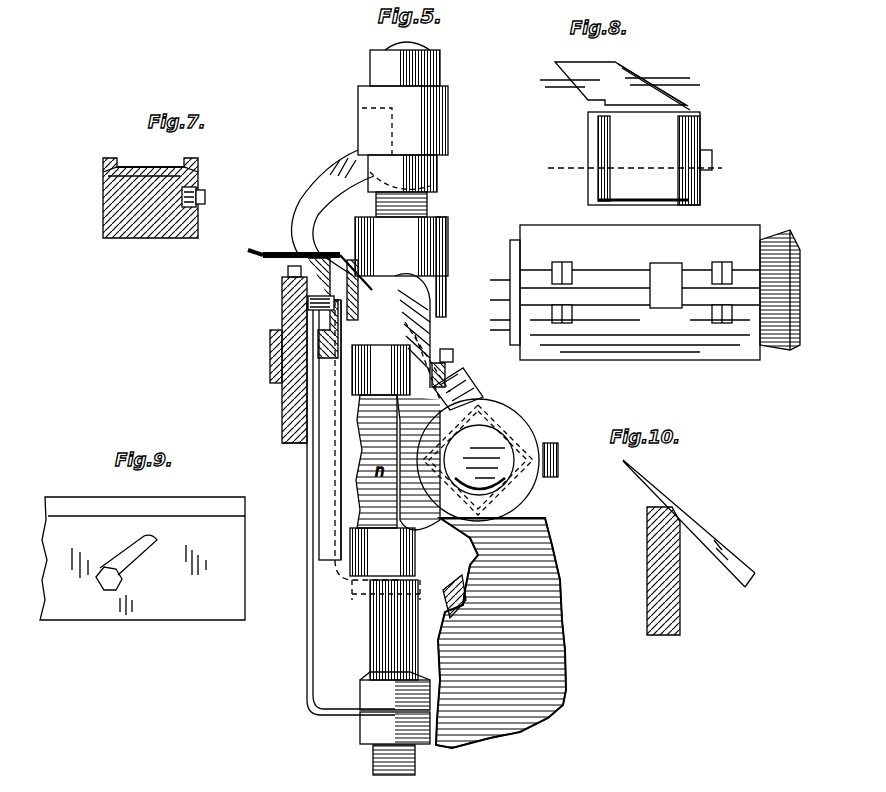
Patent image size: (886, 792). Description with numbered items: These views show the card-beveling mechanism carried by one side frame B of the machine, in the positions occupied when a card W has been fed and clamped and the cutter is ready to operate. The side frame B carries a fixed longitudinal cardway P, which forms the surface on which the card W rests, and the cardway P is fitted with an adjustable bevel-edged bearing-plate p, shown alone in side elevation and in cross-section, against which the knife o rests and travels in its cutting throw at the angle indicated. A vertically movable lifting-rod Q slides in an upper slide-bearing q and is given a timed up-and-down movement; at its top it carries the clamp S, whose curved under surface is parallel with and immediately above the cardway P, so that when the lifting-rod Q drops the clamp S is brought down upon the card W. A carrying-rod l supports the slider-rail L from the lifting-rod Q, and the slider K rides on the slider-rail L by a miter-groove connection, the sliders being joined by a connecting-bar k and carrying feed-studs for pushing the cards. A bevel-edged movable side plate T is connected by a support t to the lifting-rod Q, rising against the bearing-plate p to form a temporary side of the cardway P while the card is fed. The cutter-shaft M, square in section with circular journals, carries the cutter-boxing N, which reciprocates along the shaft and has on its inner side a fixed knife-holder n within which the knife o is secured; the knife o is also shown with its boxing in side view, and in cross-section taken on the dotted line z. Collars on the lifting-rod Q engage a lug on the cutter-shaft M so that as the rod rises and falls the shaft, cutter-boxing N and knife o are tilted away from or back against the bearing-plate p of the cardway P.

In FIG. 5, the clamp S is at (333, 212).
In FIG. 5, the cardway P is at (290, 250).
In FIG. 5, the card W is at (256, 253).
In FIG. 5, the slider K is at (281, 300).
In FIG. 5, the slider-rail L is at (269, 350).
In FIG. 5, the connecting-bar k is at (281, 378).
In FIG. 5, the cutter or knife o is at (352, 258).
In FIG. 7, the cutter or knife o is at (150, 168).
In FIG. 8, the cutter or knife o is at (654, 91).
In FIG. 10, the cutter or knife o is at (702, 528).
In FIG. 5, the upper slide-bearing q is at (401, 246).
In FIG. 5, the movable side plate T is at (393, 290).
In FIG. 5, the knife-holder n is at (448, 352).
In FIG. 7, the knife-holder n is at (103, 196).
In FIG. 8, the knife-holder n is at (596, 184).
In FIG. 5, the support t is at (331, 430).
In FIG. 5, the cutter-boxing N is at (530, 425).
In FIG. 8, the cutter-boxing N is at (640, 292).
In FIG. 5, the cutter-shaft M is at (479, 460).
In FIG. 8, the cutter-shaft M is at (510, 266).
In FIG. 5, the carrying-rod l is at (307, 630).
In FIG. 5, the lifting-rod Q is at (394, 630).
In FIG. 5, the side frame B is at (501, 633).
In FIG. 9, the bearing-plate p is at (139, 575).
In FIG. 10, the bearing-plate p is at (682, 604).
In FIG. 8, the section line z is at (636, 171).